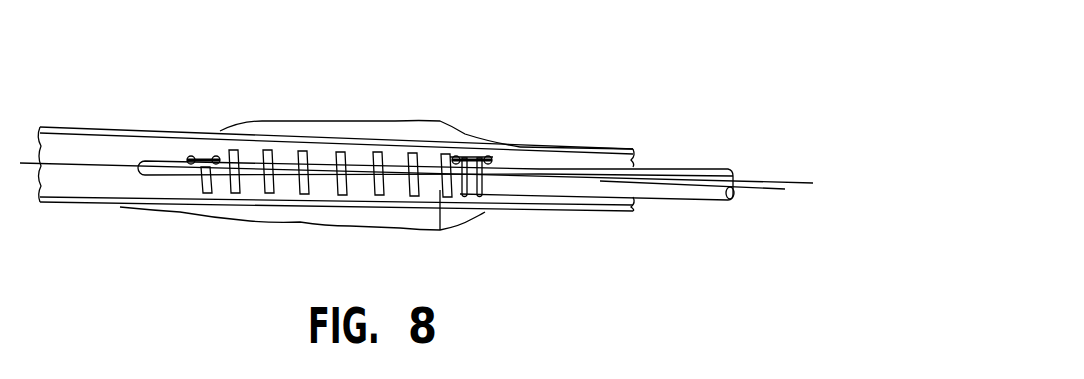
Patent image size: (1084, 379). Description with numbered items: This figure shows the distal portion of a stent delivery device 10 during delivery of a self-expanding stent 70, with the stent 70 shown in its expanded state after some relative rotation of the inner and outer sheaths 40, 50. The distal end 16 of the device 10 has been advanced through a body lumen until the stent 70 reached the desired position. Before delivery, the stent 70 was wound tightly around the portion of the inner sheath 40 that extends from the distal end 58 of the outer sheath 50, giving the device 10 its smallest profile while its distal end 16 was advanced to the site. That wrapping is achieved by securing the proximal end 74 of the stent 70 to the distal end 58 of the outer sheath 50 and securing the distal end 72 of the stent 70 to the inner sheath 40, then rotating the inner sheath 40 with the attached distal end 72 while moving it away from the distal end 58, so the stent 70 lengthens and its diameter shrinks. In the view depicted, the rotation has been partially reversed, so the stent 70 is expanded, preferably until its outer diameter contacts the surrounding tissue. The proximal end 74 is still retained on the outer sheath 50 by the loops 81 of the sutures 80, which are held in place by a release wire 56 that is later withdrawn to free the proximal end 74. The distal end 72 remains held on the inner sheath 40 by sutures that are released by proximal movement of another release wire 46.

The stent delivery device 10 is at (662, 144).
The distal end of the device 16 is at (124, 140).
The inner sheath 40 is at (253, 178).
The release wire 46 is at (792, 186).
The outer sheath 50 is at (590, 200).
The release wire 56 is at (740, 170).
The distal end of the outer sheath 58 is at (440, 190).
The stent 70 is at (318, 180).
The distal end of the stent 72 is at (206, 140).
The proximal end of the stent 74 is at (477, 143).
The sutures 80 is at (490, 186).
The loops 81 is at (189, 156).